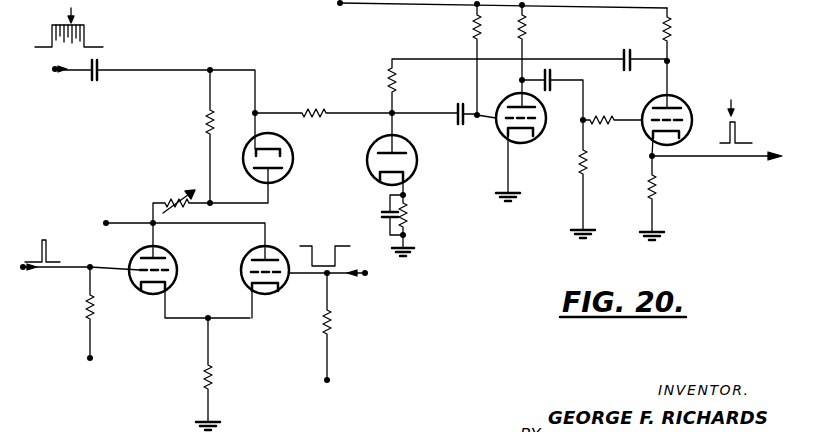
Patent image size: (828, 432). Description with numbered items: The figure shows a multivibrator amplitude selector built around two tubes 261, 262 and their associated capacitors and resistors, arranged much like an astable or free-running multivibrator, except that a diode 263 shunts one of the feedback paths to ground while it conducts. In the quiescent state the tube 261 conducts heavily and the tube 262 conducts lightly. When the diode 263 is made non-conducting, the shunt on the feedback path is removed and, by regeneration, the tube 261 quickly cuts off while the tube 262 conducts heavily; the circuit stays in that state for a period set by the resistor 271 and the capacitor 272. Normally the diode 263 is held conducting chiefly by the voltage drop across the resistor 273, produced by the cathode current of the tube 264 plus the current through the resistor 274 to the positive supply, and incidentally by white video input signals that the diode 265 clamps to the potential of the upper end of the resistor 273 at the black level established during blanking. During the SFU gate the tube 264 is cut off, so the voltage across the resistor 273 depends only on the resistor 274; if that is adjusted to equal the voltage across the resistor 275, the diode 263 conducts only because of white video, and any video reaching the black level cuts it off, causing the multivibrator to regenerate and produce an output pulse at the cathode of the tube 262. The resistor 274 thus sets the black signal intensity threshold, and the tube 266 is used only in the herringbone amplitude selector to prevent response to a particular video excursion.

The tube 261 is at (518, 144).
The tube 262 is at (646, 137).
The diode 263 is at (376, 181).
The tube 264 is at (258, 296).
The diode 265 is at (282, 183).
The tube 266 is at (140, 290).
The resistor 271 is at (470, 30).
The capacitor 272 is at (455, 108).
The resistor 273 is at (214, 374).
The resistor 274 is at (170, 196).
The resistor 275 is at (414, 222).